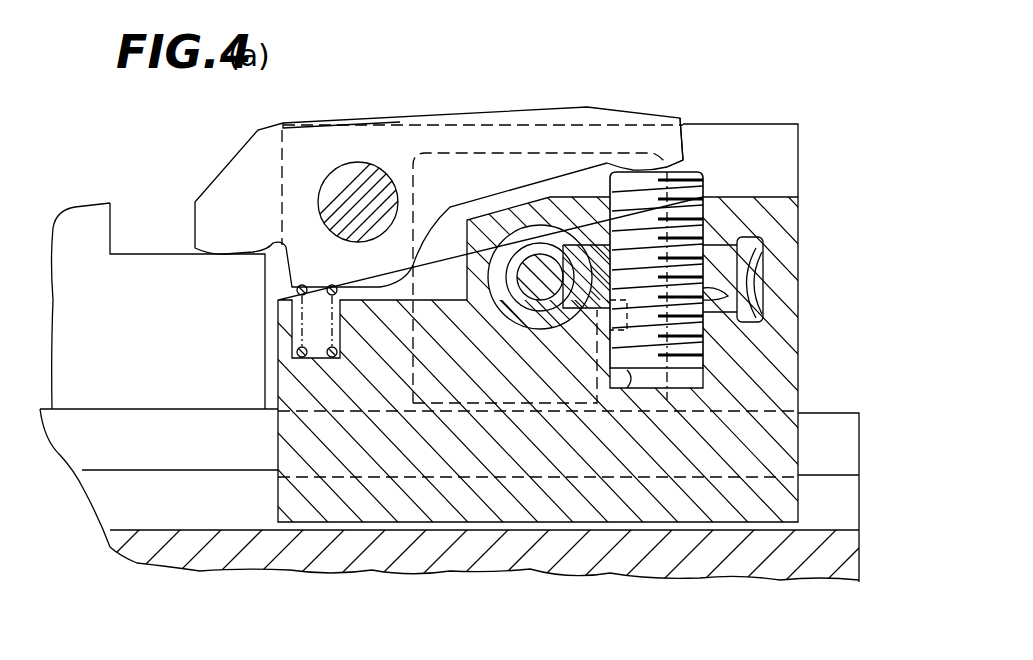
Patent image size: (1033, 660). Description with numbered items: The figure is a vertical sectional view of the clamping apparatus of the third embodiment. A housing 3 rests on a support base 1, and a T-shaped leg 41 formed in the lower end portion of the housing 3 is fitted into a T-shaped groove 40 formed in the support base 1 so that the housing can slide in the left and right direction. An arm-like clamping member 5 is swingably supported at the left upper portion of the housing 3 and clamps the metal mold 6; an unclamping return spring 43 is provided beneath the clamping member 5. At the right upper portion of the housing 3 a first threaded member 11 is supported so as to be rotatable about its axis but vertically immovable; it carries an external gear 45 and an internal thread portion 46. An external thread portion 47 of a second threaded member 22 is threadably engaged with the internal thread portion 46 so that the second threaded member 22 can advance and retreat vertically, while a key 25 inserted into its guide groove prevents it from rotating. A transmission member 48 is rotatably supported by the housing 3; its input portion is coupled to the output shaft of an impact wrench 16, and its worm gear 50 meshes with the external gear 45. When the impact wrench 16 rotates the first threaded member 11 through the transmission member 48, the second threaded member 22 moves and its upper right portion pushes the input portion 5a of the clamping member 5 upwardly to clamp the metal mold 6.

The support base 1 is at (110, 542).
The housing 3 is at (800, 312).
The clamping member 5 is at (236, 155).
The input portion 5a is at (674, 143).
The metal mold 6 is at (88, 220).
The first threaded member 11 is at (757, 273).
The impact wrench 16 is at (483, 151).
The second threaded member 22 is at (708, 210).
The key 25 is at (637, 390).
The T-shaped groove 40 is at (133, 528).
The T-shaped leg 41 is at (798, 498).
The unclamping return spring 43 is at (296, 350).
The external gear 45 is at (762, 246).
The internal thread portion 46 is at (742, 312).
The external thread portion 47 is at (707, 182).
The transmission member 48 is at (512, 308).
The worm gear 50 is at (497, 283).